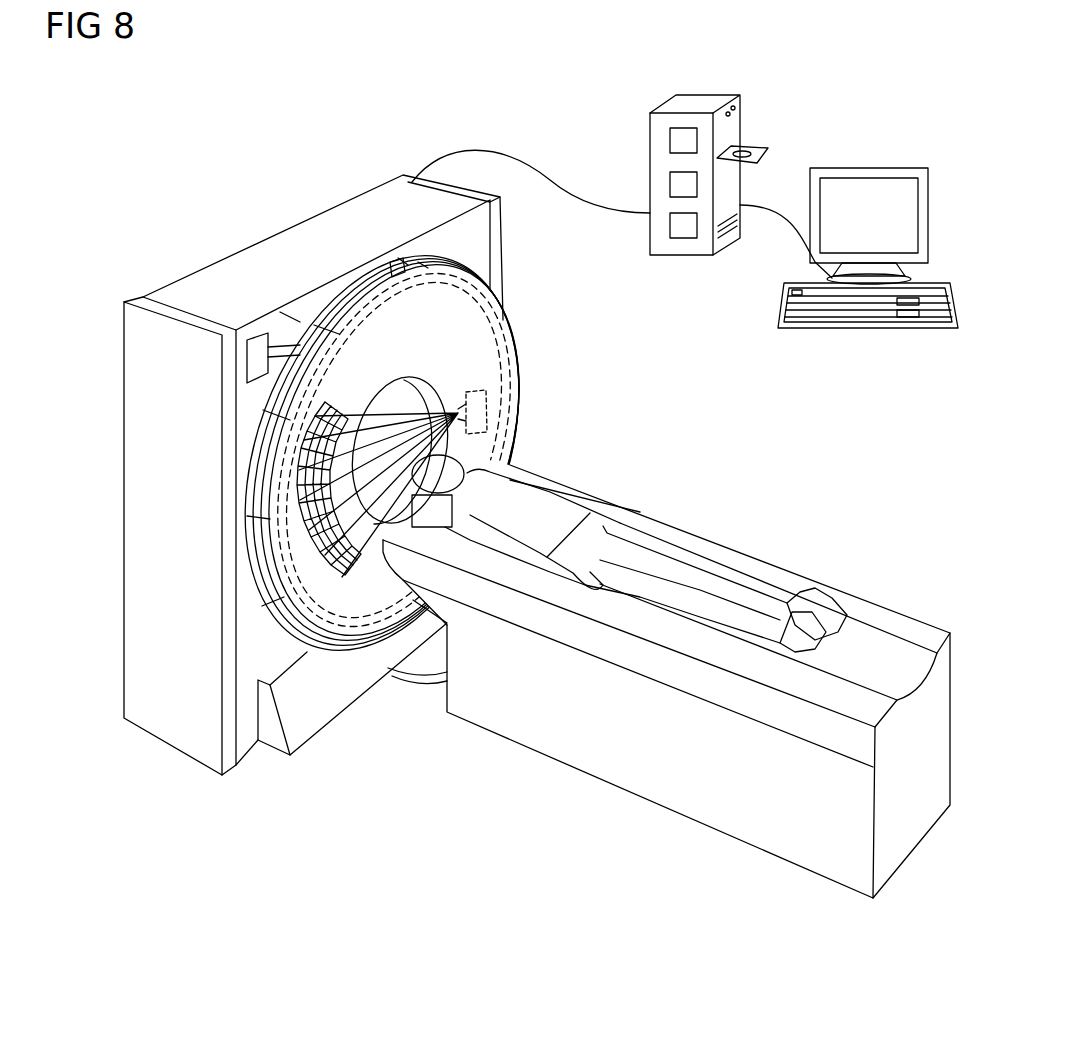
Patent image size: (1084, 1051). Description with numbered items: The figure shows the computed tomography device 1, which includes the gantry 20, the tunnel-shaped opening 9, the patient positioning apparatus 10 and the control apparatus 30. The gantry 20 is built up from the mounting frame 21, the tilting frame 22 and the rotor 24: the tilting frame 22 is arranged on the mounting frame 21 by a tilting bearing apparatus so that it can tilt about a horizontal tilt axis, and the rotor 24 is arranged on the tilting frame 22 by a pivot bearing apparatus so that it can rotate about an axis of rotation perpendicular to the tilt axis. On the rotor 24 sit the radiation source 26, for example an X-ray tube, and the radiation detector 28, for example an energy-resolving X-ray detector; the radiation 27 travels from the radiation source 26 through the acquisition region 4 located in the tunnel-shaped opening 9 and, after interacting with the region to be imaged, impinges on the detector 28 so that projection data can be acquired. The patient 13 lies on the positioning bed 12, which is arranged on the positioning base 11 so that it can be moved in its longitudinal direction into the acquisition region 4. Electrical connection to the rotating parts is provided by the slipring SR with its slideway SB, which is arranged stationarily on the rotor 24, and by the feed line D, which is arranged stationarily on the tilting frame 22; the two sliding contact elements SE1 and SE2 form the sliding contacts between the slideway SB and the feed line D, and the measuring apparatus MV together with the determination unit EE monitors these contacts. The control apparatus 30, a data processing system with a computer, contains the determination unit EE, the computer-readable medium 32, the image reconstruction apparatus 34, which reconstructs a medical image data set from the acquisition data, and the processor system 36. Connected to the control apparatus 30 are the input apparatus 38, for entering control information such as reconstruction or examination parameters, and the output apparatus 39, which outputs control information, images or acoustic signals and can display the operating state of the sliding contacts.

The computed tomography device 1 is at (227, 139).
The acquisition region 4 is at (383, 410).
The tunnel-shaped opening 9 is at (377, 452).
The patient positioning apparatus 10 is at (636, 818).
The positioning base 11 is at (581, 755).
The positioning bed 12 is at (915, 625).
The patient 13 is at (736, 583).
The gantry 20 is at (103, 530).
The mounting frame 21 is at (172, 722).
The tilting frame 22 is at (325, 226).
The rotor 24 is at (488, 348).
The radiation source 26 is at (488, 412).
The radiation 27 is at (422, 396).
The radiation detector 28 is at (333, 628).
The control apparatus 30 is at (696, 103).
The computer-readable medium 32 is at (745, 150).
The image reconstruction apparatus 34 is at (668, 140).
The processor system 36 is at (668, 228).
The input apparatus 38 is at (862, 330).
The output apparatus 39 is at (870, 170).
The measuring apparatus MV is at (252, 345).
The first sliding contact element SE1 is at (246, 251).
The second sliding contact element SE2 is at (288, 320).
The slipring SR is at (386, 176).
The slideway SB is at (421, 255).
The feed line D is at (400, 258).
The determination unit EE is at (668, 185).